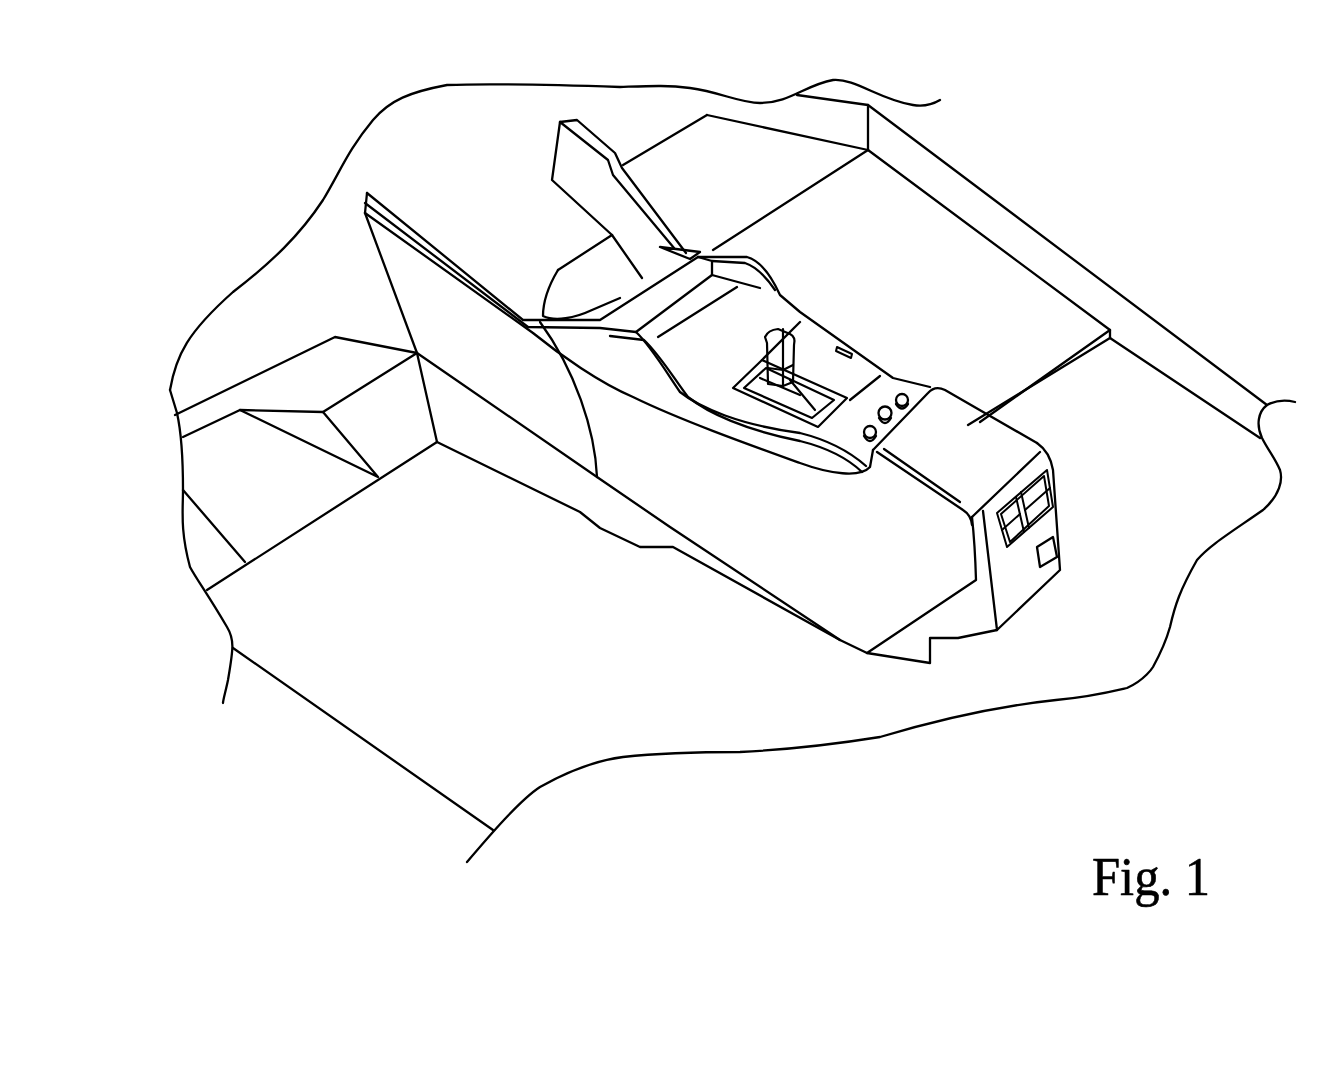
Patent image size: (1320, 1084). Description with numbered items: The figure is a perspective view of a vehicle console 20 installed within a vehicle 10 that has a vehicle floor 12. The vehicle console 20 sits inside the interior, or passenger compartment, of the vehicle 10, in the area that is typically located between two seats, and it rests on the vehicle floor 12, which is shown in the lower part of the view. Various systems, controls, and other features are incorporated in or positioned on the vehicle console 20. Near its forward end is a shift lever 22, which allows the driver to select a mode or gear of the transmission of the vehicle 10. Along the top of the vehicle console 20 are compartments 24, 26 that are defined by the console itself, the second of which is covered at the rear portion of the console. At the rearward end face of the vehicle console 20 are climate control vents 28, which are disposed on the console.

The vehicle 10 is at (218, 270).
The vehicle floor 12 is at (262, 630).
The vehicle console 20 is at (1055, 444).
The shift lever 22 is at (778, 323).
The compartment 24 is at (838, 345).
The compartment 26 is at (958, 390).
The climate control vents 28 is at (1057, 498).